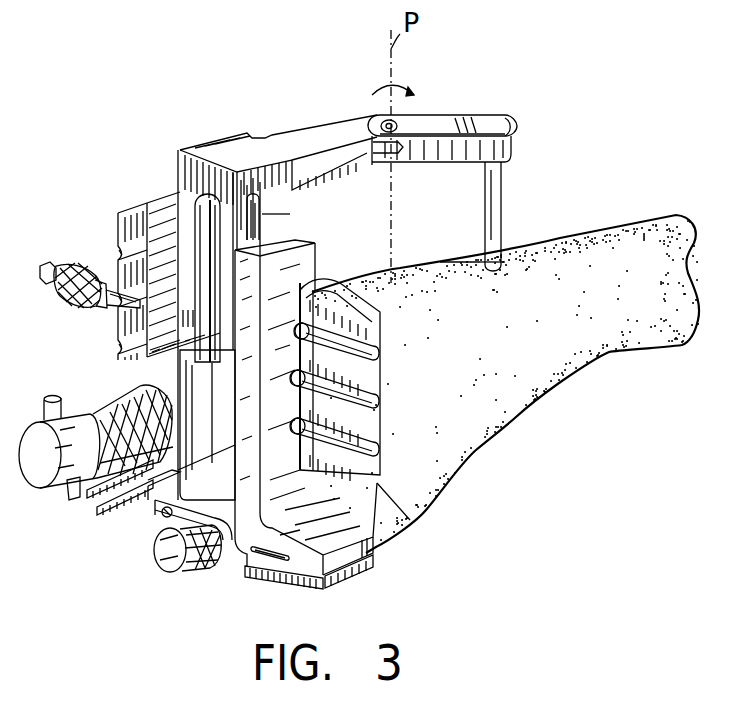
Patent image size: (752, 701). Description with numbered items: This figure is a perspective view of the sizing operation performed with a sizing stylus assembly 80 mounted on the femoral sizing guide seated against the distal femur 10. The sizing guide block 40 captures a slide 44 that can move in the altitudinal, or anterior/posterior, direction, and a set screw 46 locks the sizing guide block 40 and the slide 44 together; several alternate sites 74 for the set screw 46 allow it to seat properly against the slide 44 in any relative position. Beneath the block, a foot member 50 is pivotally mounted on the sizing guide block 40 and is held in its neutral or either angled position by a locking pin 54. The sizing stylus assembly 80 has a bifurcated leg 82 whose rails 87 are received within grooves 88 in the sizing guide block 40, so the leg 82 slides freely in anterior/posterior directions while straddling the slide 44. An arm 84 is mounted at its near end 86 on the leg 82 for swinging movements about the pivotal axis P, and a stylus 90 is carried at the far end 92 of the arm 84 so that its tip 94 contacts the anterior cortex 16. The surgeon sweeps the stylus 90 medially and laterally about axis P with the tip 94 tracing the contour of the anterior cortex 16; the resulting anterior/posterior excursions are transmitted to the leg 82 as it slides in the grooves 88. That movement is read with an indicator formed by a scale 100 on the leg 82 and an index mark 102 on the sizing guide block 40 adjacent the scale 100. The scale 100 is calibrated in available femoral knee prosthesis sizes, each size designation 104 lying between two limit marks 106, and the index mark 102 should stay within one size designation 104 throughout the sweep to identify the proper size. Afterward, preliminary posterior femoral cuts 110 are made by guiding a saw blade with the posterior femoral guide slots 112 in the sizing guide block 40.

The distal femur 10 is at (563, 388).
The anterior cortex 16 is at (472, 270).
The sizing guide block 40 is at (392, 270).
The slide 44 is at (170, 493).
The set screw 46 is at (70, 300).
The foot member 50 is at (284, 576).
The locking pin 54 is at (215, 554).
The alternate sites 74 is at (297, 438).
The sizing stylus assembly 80 is at (288, 126).
The bifurcated leg 82 is at (182, 160).
The arm 84 is at (464, 120).
The near end 86 is at (372, 122).
The rails 87 is at (280, 212).
The grooves 88 is at (296, 216).
The stylus 90 is at (500, 196).
The far end 92 is at (512, 142).
The tip 94 is at (506, 262).
The scale 100 is at (196, 200).
The index mark 102 is at (143, 212).
The size designation 104 is at (173, 267).
The limit marks 106 is at (180, 267).
The preliminary posterior femoral cuts 110 is at (410, 526).
The posterior femoral guide slots 112 is at (92, 497).